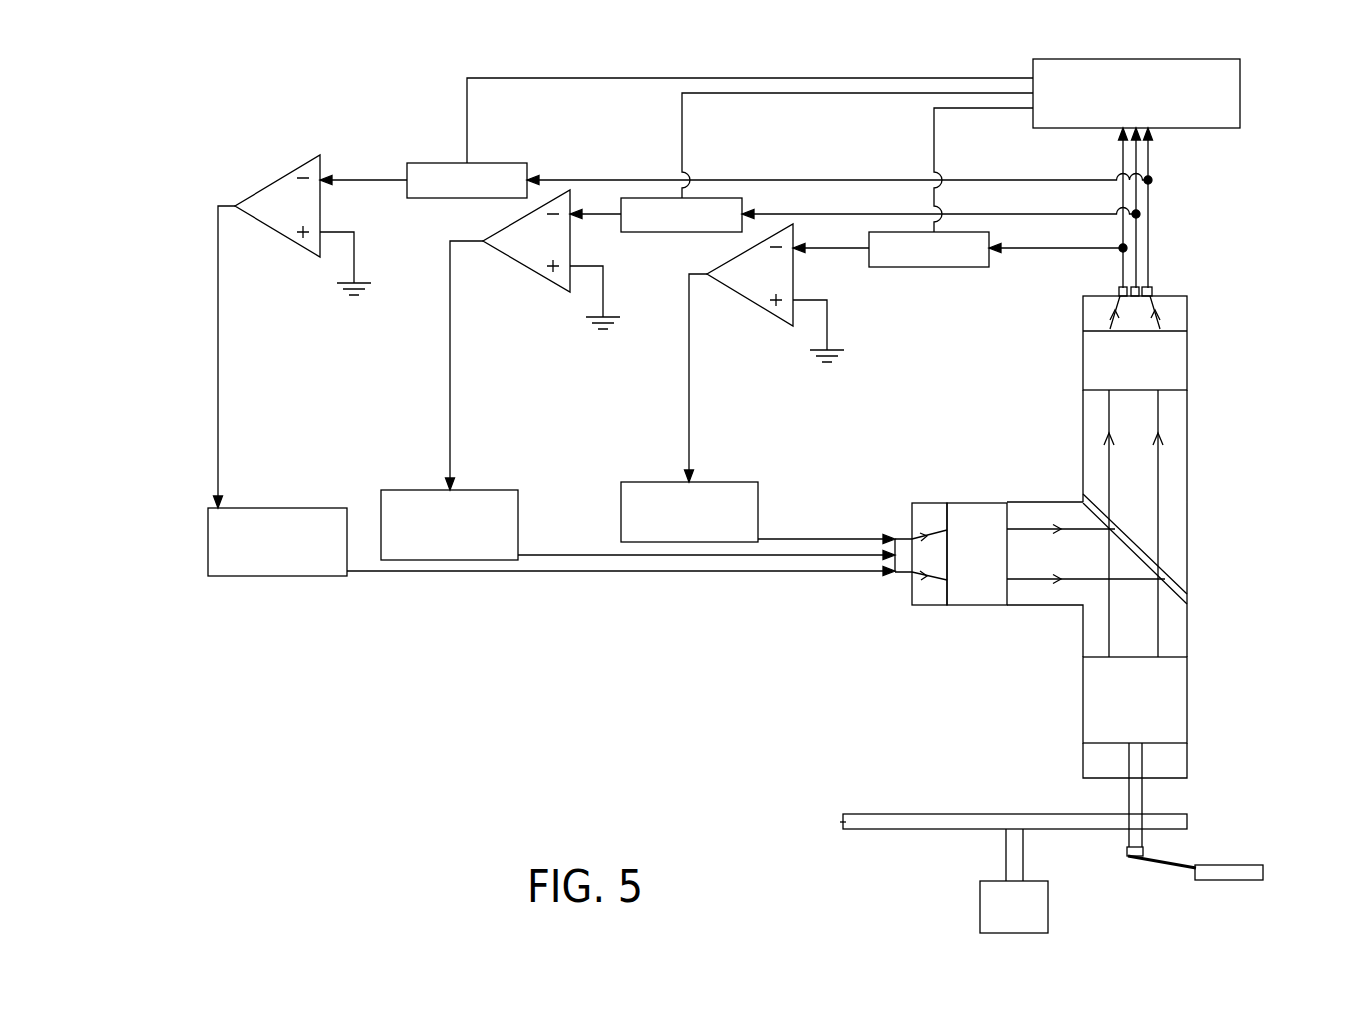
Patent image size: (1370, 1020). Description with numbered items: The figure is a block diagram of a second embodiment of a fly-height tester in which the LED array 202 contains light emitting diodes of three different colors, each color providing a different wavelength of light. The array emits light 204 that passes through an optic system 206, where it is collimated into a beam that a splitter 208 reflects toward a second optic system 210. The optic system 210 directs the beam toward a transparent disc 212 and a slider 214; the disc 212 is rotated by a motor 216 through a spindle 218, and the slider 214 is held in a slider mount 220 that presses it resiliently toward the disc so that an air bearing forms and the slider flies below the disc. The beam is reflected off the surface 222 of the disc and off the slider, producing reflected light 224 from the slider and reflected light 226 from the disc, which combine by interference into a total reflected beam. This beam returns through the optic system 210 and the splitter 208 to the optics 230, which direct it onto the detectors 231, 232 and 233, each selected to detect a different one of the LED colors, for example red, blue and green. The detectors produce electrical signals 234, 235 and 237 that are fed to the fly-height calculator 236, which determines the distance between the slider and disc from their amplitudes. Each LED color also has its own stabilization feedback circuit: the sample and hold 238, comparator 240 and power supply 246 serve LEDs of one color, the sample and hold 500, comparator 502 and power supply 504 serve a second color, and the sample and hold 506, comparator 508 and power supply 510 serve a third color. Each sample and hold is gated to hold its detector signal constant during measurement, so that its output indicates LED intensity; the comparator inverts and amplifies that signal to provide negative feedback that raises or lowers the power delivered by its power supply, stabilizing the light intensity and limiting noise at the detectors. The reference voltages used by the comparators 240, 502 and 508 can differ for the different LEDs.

The LED array 202 is at (893, 577).
The light 204 is at (938, 583).
The optic system 206 is at (980, 606).
The splitter 208 is at (1188, 596).
The second optic system 210 is at (1188, 675).
The transparent disc 212 is at (843, 822).
The slider 214 is at (1126, 856).
The motor 216 is at (980, 892).
The spindle 218 is at (1006, 845).
The slider mount 220 is at (1230, 880).
The surface of disc 222 is at (872, 813).
The reflected light from slider 224 is at (1187, 845).
The reflected light from disc 226 is at (1143, 803).
The optics 230 is at (1188, 363).
The detector 231 is at (1118, 292).
The detector 232 is at (1140, 287).
The detector 233 is at (1152, 292).
The electrical signal 234 is at (1120, 268).
The electrical signal 235 is at (1137, 162).
The fly-height calculator 236 is at (1242, 97).
The electrical signal 237 is at (1148, 223).
The sample and hold 238 is at (928, 267).
The comparator 240 is at (772, 314).
The power supply 246 is at (758, 512).
The sample and hold 500 is at (698, 232).
The comparator 502 is at (497, 249).
The power supply 504 is at (502, 490).
The sample and hold 506 is at (418, 162).
The comparator 508 is at (322, 153).
The power supply 510 is at (277, 507).